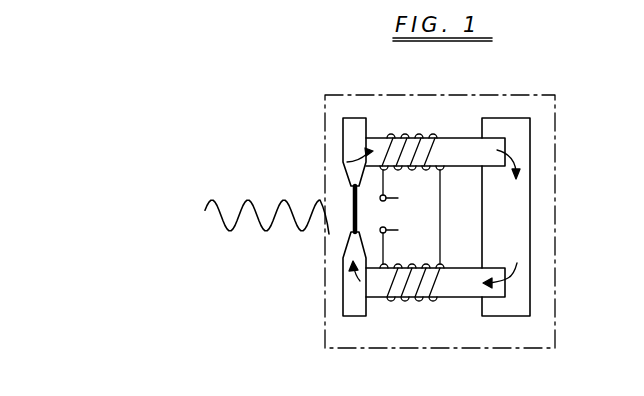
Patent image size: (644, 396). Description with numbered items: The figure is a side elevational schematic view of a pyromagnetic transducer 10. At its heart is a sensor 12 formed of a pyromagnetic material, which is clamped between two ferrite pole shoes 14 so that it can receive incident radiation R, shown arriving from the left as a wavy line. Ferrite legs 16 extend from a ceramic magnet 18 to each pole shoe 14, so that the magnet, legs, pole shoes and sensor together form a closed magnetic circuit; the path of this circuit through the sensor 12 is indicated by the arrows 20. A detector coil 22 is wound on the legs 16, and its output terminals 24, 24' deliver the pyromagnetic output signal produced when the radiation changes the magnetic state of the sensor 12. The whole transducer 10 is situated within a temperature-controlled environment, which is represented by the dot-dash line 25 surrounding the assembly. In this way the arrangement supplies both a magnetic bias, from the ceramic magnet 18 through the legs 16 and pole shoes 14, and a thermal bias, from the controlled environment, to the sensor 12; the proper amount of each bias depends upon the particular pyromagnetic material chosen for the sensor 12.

The pyromagnetic transducer 10 is at (503, 109).
The sensor 12 is at (353, 235).
The ferrite pole shoes 14 is at (353, 131).
The ferrite legs 16 is at (460, 146).
The ceramic magnet 18 is at (515, 220).
The arrows 20 is at (347, 162).
The detector coil 22 is at (435, 163).
The output terminal 24 is at (404, 195).
The output terminal 24' is at (408, 245).
The dot-dash line 25 is at (555, 328).
The incident radiation R is at (258, 208).